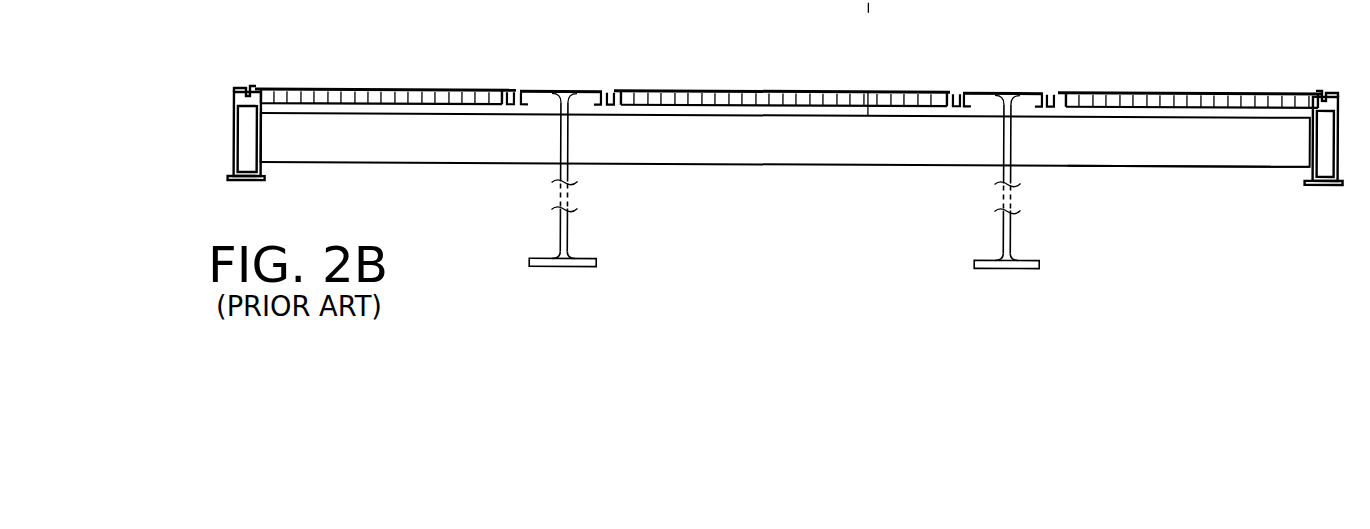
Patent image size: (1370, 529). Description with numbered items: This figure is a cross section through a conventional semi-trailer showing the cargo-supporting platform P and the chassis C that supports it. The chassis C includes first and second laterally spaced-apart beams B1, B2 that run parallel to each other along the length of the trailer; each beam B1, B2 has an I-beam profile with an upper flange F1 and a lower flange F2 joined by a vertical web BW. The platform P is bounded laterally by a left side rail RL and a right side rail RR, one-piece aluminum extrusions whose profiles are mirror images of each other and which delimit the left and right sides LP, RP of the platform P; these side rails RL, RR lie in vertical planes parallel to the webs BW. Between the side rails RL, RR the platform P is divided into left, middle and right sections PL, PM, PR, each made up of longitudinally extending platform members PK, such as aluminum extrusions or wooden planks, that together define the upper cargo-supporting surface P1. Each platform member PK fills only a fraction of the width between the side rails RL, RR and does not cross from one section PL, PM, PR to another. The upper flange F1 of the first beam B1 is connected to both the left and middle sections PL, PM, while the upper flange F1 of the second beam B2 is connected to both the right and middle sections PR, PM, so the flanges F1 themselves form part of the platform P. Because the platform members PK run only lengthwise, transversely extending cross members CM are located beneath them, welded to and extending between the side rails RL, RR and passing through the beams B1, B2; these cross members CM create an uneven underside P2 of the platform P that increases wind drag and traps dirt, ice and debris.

The left side rail RL is at (245, 180).
The right side rail RR is at (1323, 182).
The left side of platform LP is at (385, 59).
The left platform section PL is at (404, 76).
The middle platform section PM is at (782, 63).
The cargo-supporting platform P is at (778, 76).
The upper cargo-supporting surface P1 is at (951, 82).
The underside of platform P2 is at (1206, 175).
The right side of platform RP is at (1190, 66).
The right platform section PR is at (1188, 82).
The platform member PK is at (317, 100).
The cross member CM is at (424, 150).
The chassis C is at (814, 206).
The upper flange F1 is at (564, 87).
The lower flange F2 is at (566, 267).
The web BW is at (560, 230).
The first beam B1 is at (641, 0).
The second beam B2 is at (983, 0).